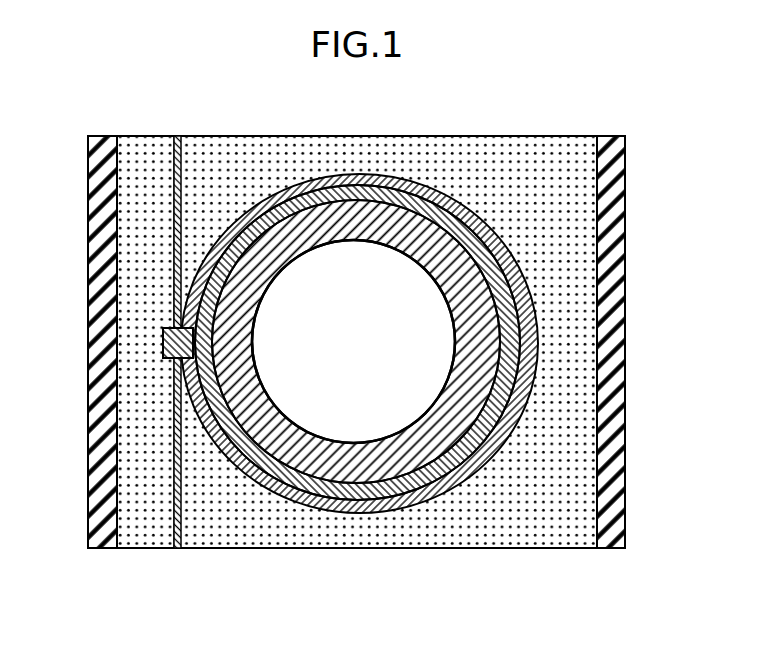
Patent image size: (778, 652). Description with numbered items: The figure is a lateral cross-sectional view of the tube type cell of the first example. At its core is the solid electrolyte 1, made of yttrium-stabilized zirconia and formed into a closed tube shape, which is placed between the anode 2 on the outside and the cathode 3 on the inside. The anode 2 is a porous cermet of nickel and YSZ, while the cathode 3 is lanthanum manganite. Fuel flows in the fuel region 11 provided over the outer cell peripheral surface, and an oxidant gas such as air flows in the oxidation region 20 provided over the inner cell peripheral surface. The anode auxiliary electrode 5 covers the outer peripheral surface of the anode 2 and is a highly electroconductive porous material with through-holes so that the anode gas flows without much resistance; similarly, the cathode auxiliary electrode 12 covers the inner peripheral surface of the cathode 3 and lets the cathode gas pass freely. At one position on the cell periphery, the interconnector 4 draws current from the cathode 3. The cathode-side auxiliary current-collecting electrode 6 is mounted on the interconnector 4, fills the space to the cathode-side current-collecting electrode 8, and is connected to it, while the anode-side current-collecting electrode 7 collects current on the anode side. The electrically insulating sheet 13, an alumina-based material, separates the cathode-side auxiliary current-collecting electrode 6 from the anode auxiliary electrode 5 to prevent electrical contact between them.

The solid electrolyte 1 is at (378, 180).
The anode 2 is at (462, 207).
The cathode 3 is at (302, 222).
The interconnector 4 is at (175, 330).
The anode auxiliary electrode 5 is at (559, 522).
The cathode-side auxiliary current-collecting electrode 6 is at (146, 527).
The anode-side current-collecting electrode 7 is at (625, 331).
The cathode-side current-collecting electrode 8 is at (88, 429).
The fuel region 11 is at (494, 526).
The cathode auxiliary electrode 12 is at (372, 410).
The electrically insulating sheet 13 is at (181, 533).
The oxidation region 20 is at (318, 405).